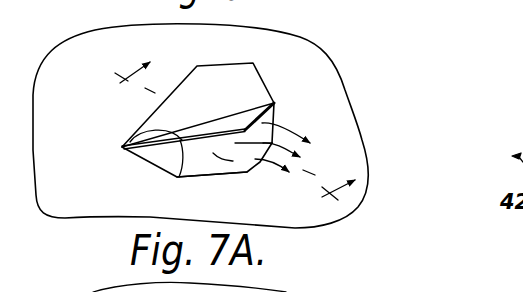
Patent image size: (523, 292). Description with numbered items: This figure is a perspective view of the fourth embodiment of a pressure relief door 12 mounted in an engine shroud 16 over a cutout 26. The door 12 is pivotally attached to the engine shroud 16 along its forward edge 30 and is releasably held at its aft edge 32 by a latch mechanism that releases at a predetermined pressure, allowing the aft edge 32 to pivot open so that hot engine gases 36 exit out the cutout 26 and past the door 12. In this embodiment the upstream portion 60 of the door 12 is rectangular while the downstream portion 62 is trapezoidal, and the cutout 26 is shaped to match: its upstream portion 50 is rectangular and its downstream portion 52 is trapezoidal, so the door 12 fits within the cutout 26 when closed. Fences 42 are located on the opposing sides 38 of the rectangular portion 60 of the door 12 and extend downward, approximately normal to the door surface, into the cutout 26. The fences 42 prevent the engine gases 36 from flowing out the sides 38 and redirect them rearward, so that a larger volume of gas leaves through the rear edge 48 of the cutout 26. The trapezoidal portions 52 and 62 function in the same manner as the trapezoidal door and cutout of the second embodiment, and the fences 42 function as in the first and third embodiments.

The pressure relief door 12 is at (198, 88).
The engine shroud 16 is at (333, 59).
The cutout 26 is at (215, 176).
The forward edge 30 is at (123, 146).
The side edge 32 is at (267, 113).
The engine gases 36 is at (310, 143).
The opposing sides 38 is at (140, 132).
The fence 42 is at (157, 162).
The rear edge 48 is at (252, 168).
The upstream portion of the cutout 50 is at (163, 194).
The downstream portion of the cutout 52 is at (244, 203).
The upstream portion of the door 60 is at (235, 63).
The downstream portion of the door 62 is at (265, 80).